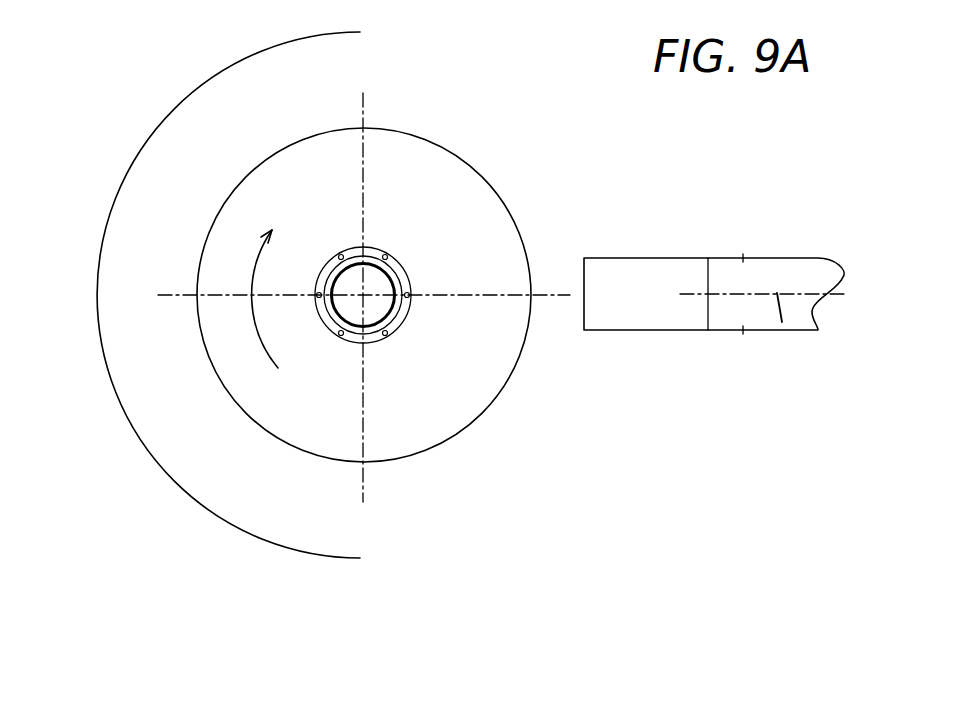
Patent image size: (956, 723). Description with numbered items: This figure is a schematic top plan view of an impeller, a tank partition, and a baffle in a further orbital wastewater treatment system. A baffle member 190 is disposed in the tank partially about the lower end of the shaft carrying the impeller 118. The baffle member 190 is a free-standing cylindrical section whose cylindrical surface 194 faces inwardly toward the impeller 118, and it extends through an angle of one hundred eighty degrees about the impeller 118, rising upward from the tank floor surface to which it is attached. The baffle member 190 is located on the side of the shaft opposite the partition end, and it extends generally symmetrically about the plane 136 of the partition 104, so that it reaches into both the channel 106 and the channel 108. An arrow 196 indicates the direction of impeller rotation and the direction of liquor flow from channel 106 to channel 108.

The baffle member 190 is at (320, 287).
The cylindrical surface 194 is at (118, 192).
The arrow 196 is at (270, 344).
The impeller 118 is at (368, 477).
The partition 104 is at (718, 294).
The plane of partition 136 is at (786, 336).
The channel 108 is at (692, 188).
The channel 106 is at (712, 413).